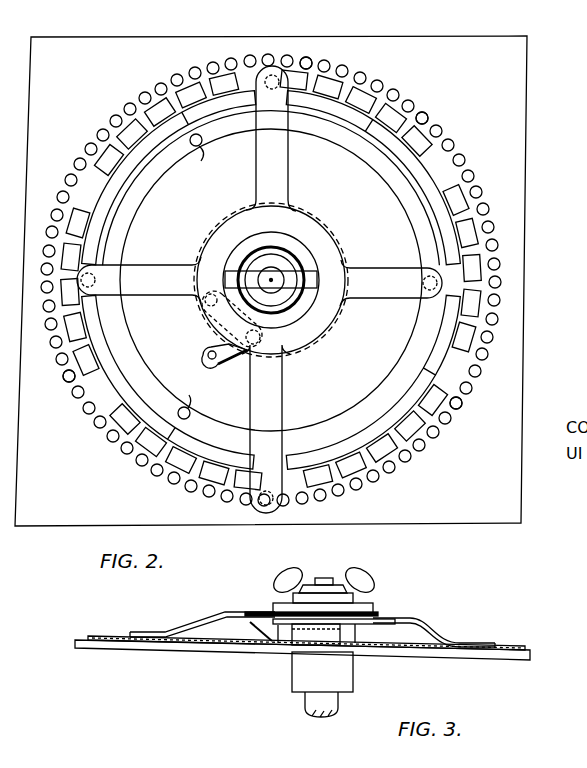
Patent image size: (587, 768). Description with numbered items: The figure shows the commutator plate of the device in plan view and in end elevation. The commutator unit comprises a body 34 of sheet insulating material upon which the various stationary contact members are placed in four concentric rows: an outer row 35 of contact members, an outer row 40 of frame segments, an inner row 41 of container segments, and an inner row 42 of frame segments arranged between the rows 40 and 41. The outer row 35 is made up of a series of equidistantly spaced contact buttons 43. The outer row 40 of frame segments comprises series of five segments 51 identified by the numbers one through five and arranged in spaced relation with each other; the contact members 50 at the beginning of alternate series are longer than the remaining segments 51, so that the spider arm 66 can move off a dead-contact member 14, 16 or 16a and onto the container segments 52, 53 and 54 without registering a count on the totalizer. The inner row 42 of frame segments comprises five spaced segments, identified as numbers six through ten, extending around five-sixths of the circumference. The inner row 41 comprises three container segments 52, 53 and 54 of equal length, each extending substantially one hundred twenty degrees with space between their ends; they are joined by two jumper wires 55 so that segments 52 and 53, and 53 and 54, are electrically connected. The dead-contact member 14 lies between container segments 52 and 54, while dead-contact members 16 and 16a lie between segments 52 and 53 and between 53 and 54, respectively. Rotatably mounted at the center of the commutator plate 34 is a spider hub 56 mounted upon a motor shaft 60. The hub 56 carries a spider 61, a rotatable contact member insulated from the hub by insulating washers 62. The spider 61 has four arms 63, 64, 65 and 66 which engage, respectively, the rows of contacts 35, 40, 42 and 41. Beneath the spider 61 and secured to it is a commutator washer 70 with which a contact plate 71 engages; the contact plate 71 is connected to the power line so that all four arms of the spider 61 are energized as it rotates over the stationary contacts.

In FIG. 2, the body 34 is at (521, 65).
In FIG. 3, the body 34 is at (78, 641).
In FIG. 2, the outer row of contact members 35 is at (425, 111).
In FIG. 3, the outer row of contact members 35 is at (106, 638).
In FIG. 2, the contact buttons 43 is at (397, 93).
In FIG. 3, the contact buttons 43 is at (213, 643).
In FIG. 2, the contact members 50 is at (310, 73).
In FIG. 2, the segments 51 is at (234, 86).
In FIG. 2, the outer row of frame segments 40 is at (443, 158).
In FIG. 2, the inner row of container segments 41 is at (400, 204).
In FIG. 2, the inner row of frame segments 42 is at (406, 188).
In FIG. 2, the container segment 52 is at (393, 366).
In FIG. 2, the container segment 53 is at (134, 356).
In FIG. 2, the container segment 54 is at (347, 147).
In FIG. 2, the spider 61 is at (341, 323).
In FIG. 3, the spider 61 is at (276, 610).
In FIG. 3, the insulating washers 62 is at (378, 616).
In FIG. 2, the arm 63 is at (282, 413).
In FIG. 3, the arm 63 is at (345, 638).
In FIG. 2, the arm 64 is at (258, 186).
In FIG. 2, the arm 65 is at (160, 269).
In FIG. 3, the arm 65 is at (201, 630).
In FIG. 2, the arm 66 is at (391, 279).
In FIG. 3, the arm 66 is at (447, 638).
In FIG. 2, the dead-contact member 14 is at (418, 299).
In FIG. 2, the dead-contact member 16 is at (191, 411).
In FIG. 2, the pin 16a is at (203, 147).
In FIG. 2, the jumper wires 55 is at (201, 160).
In FIG. 3, the commutator washer 70 is at (390, 625).
In FIG. 2, the contact plate 71 is at (212, 349).
In FIG. 3, the contact plate 71 is at (252, 630).
In FIG. 3, the spider hub 56 is at (292, 672).
In FIG. 3, the motor shaft 60 is at (305, 704).